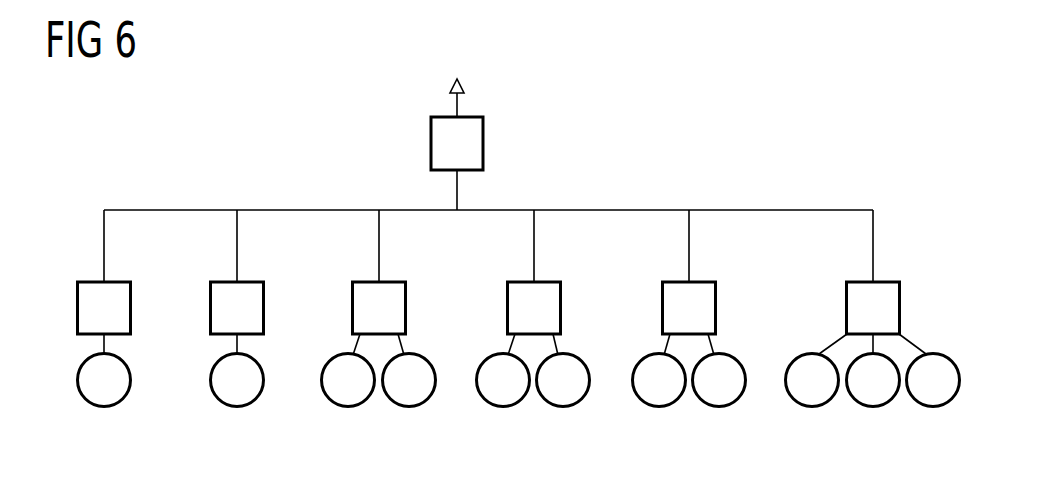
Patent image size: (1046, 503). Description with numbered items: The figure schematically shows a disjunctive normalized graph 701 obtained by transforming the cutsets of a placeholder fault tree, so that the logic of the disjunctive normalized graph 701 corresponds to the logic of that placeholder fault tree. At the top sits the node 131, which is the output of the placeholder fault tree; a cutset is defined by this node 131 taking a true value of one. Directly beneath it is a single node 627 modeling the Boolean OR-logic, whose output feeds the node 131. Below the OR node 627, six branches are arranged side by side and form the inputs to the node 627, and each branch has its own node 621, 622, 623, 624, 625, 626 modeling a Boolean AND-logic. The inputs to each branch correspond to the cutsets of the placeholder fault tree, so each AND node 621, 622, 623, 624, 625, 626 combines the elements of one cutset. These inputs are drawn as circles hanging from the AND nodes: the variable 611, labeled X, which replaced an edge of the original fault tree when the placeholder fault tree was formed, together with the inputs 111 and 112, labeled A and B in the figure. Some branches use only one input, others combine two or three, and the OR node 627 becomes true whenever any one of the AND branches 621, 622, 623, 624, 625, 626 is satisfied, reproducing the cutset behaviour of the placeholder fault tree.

The disjunctive normalized graph 701 is at (824, 89).
The node 131 is at (466, 83).
The node modeling Boolean OR-logic 627 is at (484, 145).
The node modeling Boolean AND-logic 621 is at (90, 282).
The node modeling Boolean AND-logic 622 is at (223, 282).
The node modeling Boolean AND-logic 623 is at (365, 282).
The node modeling Boolean AND-logic 624 is at (520, 282).
The node modeling Boolean AND-logic 625 is at (675, 282).
The node modeling Boolean AND-logic 626 is at (859, 282).
The variable 611 is at (104, 407).
The input signal B 112 is at (237, 407).
The input signal A 111 is at (503, 407).